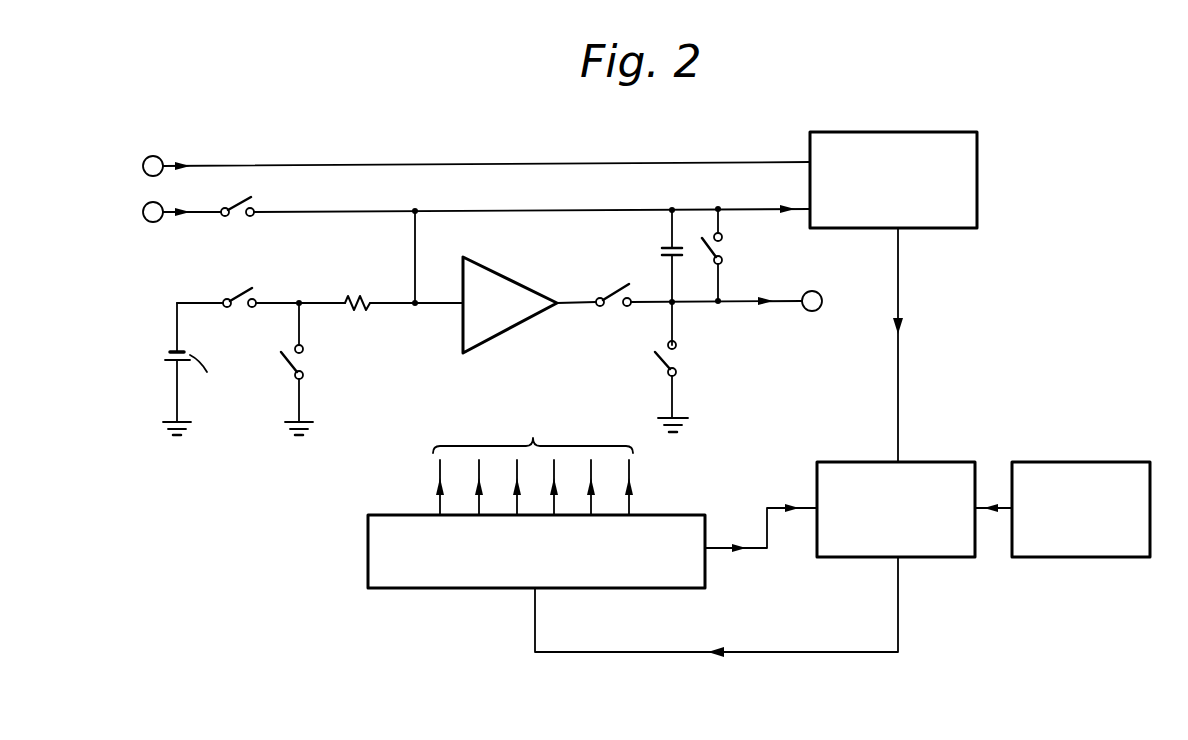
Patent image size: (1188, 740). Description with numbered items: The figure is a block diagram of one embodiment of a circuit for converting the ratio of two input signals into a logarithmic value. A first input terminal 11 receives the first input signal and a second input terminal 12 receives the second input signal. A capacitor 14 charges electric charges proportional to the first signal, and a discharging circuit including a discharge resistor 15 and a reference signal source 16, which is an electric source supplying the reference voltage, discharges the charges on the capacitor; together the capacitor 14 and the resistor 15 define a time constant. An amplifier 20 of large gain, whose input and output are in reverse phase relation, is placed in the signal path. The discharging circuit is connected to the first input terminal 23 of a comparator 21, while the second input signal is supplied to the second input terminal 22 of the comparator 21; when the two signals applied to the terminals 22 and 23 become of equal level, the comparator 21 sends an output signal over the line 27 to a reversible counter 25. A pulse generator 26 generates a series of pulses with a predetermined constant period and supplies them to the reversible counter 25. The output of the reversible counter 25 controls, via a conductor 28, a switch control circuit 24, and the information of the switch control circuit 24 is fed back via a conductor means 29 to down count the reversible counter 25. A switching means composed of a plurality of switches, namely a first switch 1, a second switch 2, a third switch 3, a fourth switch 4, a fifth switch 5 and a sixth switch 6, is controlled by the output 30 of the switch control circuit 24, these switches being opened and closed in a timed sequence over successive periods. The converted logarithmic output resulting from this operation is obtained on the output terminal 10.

The switch SW1 1 is at (222, 198).
The switch SW2 2 is at (237, 312).
The switch SW3 3 is at (678, 357).
The switch SW4 4 is at (608, 308).
The switch SW5 5 is at (723, 243).
The switch SW6 6 is at (287, 368).
The output terminal 10 is at (820, 310).
The first input terminal 11 is at (158, 222).
The second input terminal 12 is at (160, 157).
The capacitor C 14 is at (658, 252).
The discharge resistor R 15 is at (358, 315).
The reference signal source 16 is at (162, 357).
The amplifier 20 is at (512, 277).
The comparator 21 is at (945, 132).
The second input terminal of the comparator 22 is at (808, 160).
The first input terminal of the comparator 23 is at (808, 205).
The switch control circuit 24 is at (368, 550).
The reversible counter 25 is at (942, 462).
The pulse generator 26 is at (1058, 462).
The line 27 is at (900, 300).
The conductor 28 is at (826, 652).
The conductor means 29 is at (762, 552).
The output of the switch control circuit 30 is at (533, 463).